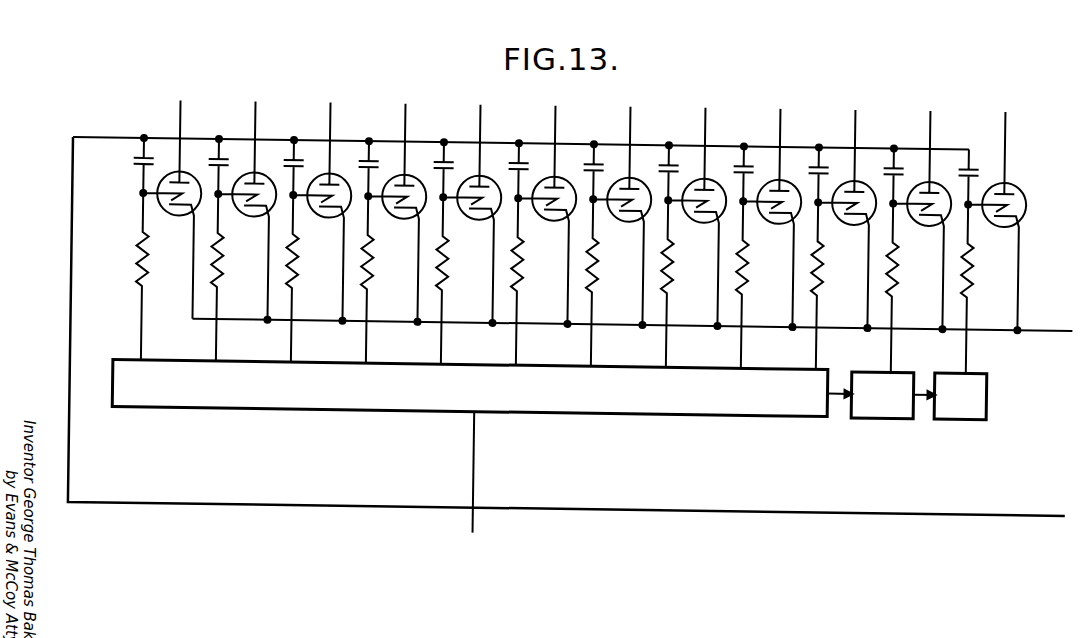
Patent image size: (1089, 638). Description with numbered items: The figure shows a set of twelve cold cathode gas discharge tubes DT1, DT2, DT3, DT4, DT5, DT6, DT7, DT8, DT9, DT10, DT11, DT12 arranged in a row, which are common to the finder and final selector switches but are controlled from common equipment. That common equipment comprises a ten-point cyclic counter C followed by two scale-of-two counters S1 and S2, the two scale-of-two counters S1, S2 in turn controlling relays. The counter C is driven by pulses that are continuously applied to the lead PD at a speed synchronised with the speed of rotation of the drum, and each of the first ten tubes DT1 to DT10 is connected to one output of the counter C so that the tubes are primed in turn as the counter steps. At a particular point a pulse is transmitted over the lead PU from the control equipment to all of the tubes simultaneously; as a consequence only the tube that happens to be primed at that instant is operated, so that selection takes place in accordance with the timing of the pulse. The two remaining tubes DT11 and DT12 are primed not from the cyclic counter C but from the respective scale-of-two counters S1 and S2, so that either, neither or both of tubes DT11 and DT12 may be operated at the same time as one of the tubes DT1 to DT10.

The cold cathode gas discharge tube DT1 is at (167, 230).
The cold cathode gas discharge tube DT2 is at (242, 231).
The cold cathode gas discharge tube DT3 is at (317, 232).
The cold cathode gas discharge tube DT4 is at (392, 233).
The cold cathode gas discharge tube DT5 is at (467, 234).
The cold cathode gas discharge tube DT6 is at (542, 235).
The cold cathode gas discharge tube DT7 is at (617, 236).
The cold cathode gas discharge tube DT8 is at (692, 237).
The cold cathode gas discharge tube DT9 is at (767, 238).
The cold cathode gas discharge tube DT10 is at (842, 239).
The cold cathode gas discharge tube DT11 is at (917, 241).
The cold cathode gas discharge tube DT12 is at (992, 242).
The 10-point cyclic counter C is at (470, 388).
The scale-of-two counter S1 is at (870, 395).
The scale-of-two counter S2 is at (950, 396).
The lead PU is at (569, 326).
The lead PD is at (490, 472).